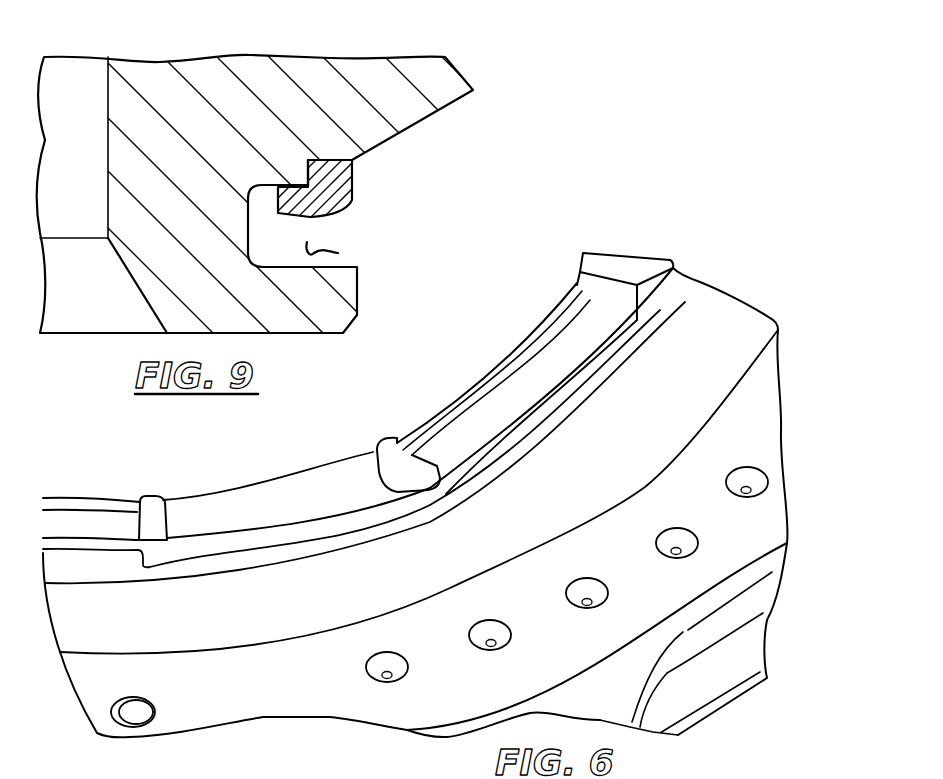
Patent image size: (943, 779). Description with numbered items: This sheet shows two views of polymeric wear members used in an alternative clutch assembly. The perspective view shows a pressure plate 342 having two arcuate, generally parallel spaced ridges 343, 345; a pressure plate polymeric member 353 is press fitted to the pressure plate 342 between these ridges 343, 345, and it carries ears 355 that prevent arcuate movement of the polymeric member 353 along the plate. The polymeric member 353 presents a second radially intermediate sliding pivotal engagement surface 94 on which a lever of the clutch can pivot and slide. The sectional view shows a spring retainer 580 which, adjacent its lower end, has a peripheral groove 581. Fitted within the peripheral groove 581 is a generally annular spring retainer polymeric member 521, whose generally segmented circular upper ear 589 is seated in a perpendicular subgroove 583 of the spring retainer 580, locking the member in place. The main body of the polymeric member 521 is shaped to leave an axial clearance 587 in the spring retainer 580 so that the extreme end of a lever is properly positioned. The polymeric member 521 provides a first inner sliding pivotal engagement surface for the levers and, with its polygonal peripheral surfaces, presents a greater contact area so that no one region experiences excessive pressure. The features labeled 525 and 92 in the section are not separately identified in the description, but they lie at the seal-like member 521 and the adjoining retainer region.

In FIG. 9, the spring retainer 580 is at (463, 76).
In FIG. 9, the peripheral groove 581 is at (250, 232).
In FIG. 9, the perpendicular subgroove 583 is at (356, 186).
In FIG. 9, the axial clearance 587 is at (338, 253).
In FIG. 9, the segmented circular upper ear 589 is at (362, 168).
In FIG. 9, the seal 525 is at (353, 200).
In FIG. 9, the spring retainer polymeric member 521 is at (345, 208).
In FIG. 9, the seal member 92 is at (310, 217).
In FIG. 6, the pressure plate 342 is at (730, 293).
In FIG. 6, the ridge 343 is at (507, 377).
In FIG. 6, the ridge 345 is at (550, 413).
In FIG. 6, the pressure plate polymeric member 353 is at (440, 450).
In FIG. 6, the ear 355 is at (583, 282).
In FIG. 6, the second radially intermediate sliding pivotal engagement surface 94 is at (582, 336).